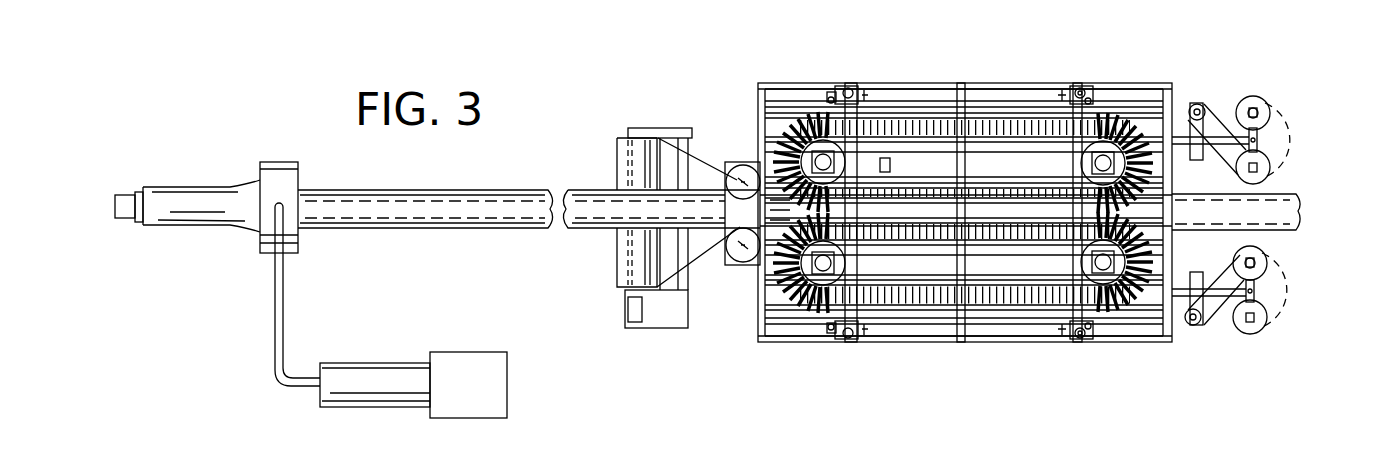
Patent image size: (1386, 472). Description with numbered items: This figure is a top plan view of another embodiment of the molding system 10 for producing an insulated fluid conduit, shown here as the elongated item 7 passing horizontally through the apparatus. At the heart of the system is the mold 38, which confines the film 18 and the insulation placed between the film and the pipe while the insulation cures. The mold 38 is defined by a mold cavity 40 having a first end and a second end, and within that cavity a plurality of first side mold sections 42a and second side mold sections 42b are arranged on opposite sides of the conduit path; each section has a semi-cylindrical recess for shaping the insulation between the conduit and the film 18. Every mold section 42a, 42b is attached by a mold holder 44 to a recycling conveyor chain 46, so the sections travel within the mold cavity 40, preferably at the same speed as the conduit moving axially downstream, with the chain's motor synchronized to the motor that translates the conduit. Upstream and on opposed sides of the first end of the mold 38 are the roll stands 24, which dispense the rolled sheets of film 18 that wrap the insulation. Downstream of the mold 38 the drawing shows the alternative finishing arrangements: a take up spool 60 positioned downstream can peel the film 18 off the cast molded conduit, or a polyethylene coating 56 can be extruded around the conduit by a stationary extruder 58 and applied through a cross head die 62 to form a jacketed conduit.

The workpiece 7 is at (801, 116).
The molding system 10 is at (693, 467).
The film 18 is at (690, 258).
The roll stands 24 is at (1257, 113).
The mold 38 is at (1037, 343).
The mold cavity 40 is at (1155, 100).
The first side mold sections 42a is at (903, 300).
The second side mold sections 42b is at (930, 110).
The mold holder 44 is at (883, 270).
The recycling conveyor chain 46 is at (1003, 290).
The polyethylene coating 56 is at (240, 237).
The stationary extruder 58 is at (385, 392).
The take up spool 60 is at (620, 262).
The cross head die 62 is at (293, 190).